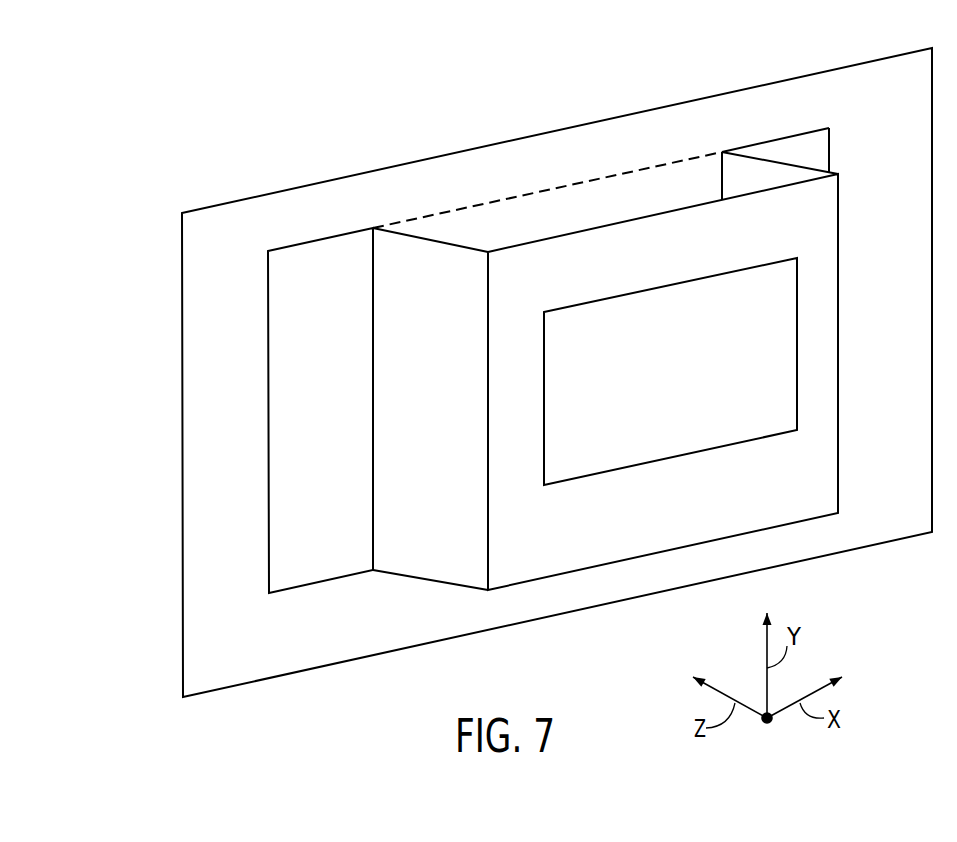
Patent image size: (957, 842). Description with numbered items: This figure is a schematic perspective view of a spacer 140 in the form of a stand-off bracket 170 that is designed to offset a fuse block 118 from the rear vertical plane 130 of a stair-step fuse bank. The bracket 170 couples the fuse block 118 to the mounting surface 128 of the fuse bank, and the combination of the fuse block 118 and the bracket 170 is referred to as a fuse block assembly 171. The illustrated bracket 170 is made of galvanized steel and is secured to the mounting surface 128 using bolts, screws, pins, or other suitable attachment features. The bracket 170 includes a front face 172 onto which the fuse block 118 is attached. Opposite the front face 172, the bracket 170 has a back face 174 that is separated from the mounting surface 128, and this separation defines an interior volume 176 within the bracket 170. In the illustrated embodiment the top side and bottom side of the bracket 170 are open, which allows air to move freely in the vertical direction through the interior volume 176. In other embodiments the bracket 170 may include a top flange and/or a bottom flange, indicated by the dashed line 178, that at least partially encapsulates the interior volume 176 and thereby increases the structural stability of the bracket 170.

The fuse block assembly 171 is at (206, 82).
The mounting surface 128 is at (218, 602).
The rear vertical plane 130 is at (557, 372).
The stand-off bracket 170 is at (443, 399).
The spacer 140 is at (577, 572).
The interior volume 176 is at (523, 222).
The dashed line 178 is at (552, 190).
The back face 174 is at (697, 212).
The fuse block 118 is at (686, 391).
The front face 172 is at (669, 460).